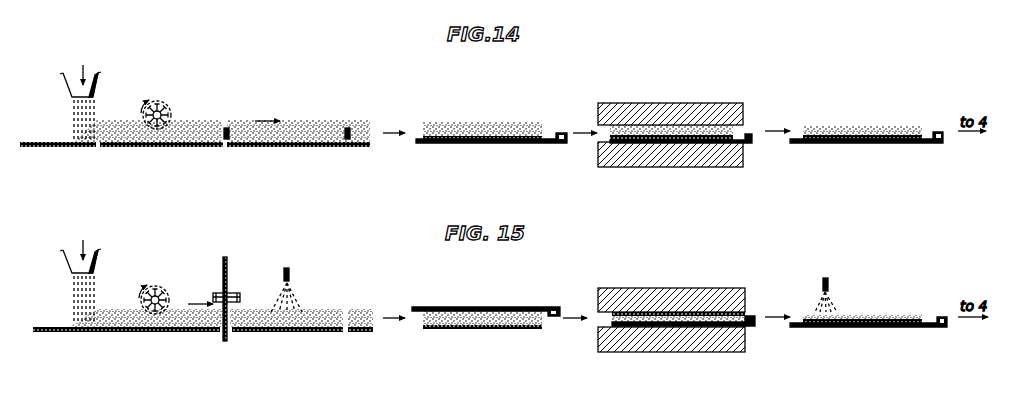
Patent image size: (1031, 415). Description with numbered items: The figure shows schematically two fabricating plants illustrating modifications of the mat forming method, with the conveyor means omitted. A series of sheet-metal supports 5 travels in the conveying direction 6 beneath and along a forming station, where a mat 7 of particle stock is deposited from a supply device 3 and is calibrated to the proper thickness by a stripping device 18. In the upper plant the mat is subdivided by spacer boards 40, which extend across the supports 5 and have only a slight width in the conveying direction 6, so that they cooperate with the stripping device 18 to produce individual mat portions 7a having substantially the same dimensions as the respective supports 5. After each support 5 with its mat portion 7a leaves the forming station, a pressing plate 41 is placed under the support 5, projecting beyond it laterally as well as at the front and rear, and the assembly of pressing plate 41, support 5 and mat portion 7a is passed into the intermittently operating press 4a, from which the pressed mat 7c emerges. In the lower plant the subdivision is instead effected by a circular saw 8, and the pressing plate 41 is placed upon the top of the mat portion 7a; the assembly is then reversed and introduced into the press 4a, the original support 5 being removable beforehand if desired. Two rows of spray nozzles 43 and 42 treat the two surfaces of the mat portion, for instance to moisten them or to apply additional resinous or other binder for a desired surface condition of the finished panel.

In FIG. 14, the particle dispensing device 3 is at (68, 87).
In FIG. 15, the particle dispensing device 3 is at (69, 264).
In FIG. 14, the sheet-metal support 5 is at (62, 147).
In FIG. 15, the sheet-metal support 5 is at (136, 333).
In FIG. 14, the mat 7 is at (115, 130).
In FIG. 15, the mat 7 is at (115, 312).
In FIG. 14, the mat portion 7a is at (310, 133).
In FIG. 15, the mat portion 7a is at (331, 318).
In FIG. 14, the compressed powder layer 7c is at (870, 128).
In FIG. 15, the compressed powder layer 7c is at (878, 314).
In FIG. 14, the stripping device 18 is at (169, 111).
In FIG. 15, the stripping device 18 is at (161, 289).
In FIG. 14, the spacer board 40 is at (229, 128).
In FIG. 14, the conveying direction 6 is at (258, 121).
In FIG. 15, the conveying direction 6 is at (189, 304).
In FIG. 15, the circular saw 8 is at (228, 263).
In FIG. 15, the spray nozzle 43 is at (291, 274).
In FIG. 15, the spray nozzle 42 is at (829, 282).
In FIG. 14, the pressing plate 41 is at (512, 144).
In FIG. 15, the pressing plate 41 is at (530, 307).
In FIG. 14, the press 4a is at (645, 156).
In FIG. 15, the press 4a is at (675, 297).